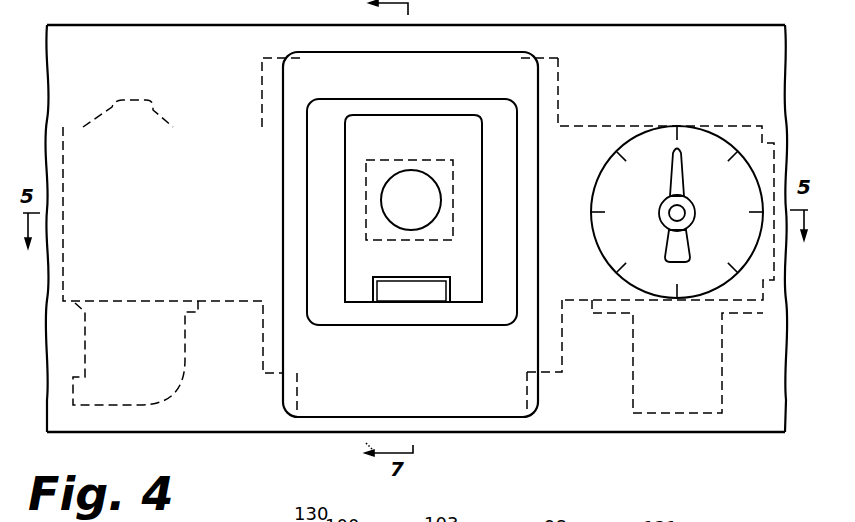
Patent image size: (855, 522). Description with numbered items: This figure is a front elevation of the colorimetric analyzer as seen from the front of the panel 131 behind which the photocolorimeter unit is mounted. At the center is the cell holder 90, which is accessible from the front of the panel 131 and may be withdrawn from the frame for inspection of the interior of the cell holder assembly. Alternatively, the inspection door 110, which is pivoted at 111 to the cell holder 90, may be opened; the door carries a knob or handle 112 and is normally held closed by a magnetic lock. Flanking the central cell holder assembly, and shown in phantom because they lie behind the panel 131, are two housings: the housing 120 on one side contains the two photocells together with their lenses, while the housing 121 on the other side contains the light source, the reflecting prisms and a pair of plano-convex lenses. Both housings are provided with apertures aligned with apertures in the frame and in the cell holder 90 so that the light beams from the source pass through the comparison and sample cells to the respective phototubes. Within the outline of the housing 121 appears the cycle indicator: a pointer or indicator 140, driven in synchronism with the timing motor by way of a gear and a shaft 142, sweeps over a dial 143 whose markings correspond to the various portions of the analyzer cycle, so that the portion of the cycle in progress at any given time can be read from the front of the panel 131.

The cell holder 90 is at (327, 312).
The inspection door 110 is at (362, 293).
The pivot 111 is at (432, 292).
The knob or handle 112 is at (425, 217).
The housing 120 is at (150, 118).
The housing 121 is at (588, 130).
The panel 131 is at (225, 425).
The pointer or indicator 140 is at (673, 245).
The shaft 142 is at (680, 215).
The dial 143 is at (612, 176).